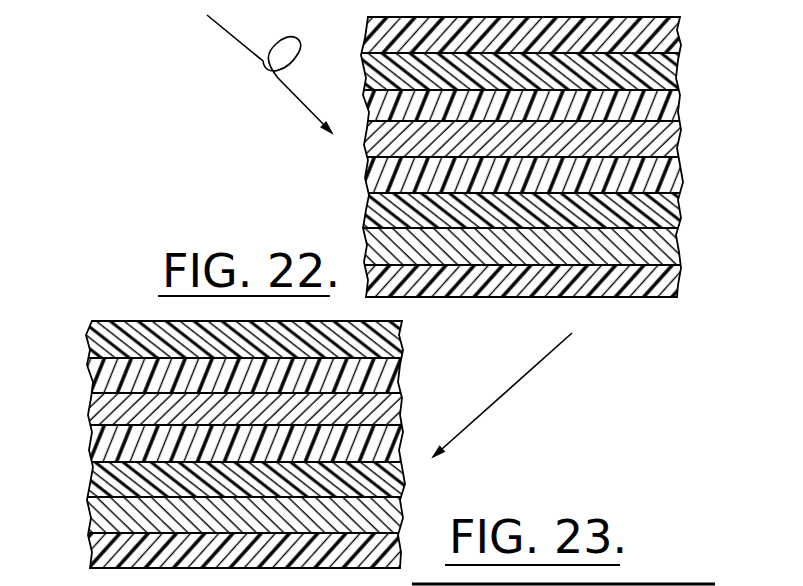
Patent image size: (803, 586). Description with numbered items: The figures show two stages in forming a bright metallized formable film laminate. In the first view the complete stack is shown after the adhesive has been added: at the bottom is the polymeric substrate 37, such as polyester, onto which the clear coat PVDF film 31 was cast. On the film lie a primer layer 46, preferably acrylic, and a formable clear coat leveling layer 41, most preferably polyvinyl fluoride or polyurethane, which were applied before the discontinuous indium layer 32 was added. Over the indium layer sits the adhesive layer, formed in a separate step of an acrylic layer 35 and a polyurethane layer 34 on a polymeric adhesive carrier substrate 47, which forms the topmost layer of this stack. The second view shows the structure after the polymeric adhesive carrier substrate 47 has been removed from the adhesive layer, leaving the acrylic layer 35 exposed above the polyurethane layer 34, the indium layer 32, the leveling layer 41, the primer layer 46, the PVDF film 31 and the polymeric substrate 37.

In FIG. 22, the clear coat PVDF film 31 is at (680, 242).
In FIG. 23, the clear coat PVDF film 31 is at (88, 516).
In FIG. 22, the discontinuous indium layer 32 is at (681, 138).
In FIG. 23, the discontinuous indium layer 32 is at (88, 408).
In FIG. 22, the polyurethane layer 34 is at (681, 106).
In FIG. 23, the polyurethane layer 34 is at (88, 376).
In FIG. 22, the acrylic layer 35 is at (681, 73).
In FIG. 23, the acrylic layer 35 is at (88, 344).
In FIG. 22, the polymeric substrate 37 is at (680, 284).
In FIG. 23, the polymeric substrate 37 is at (88, 551).
In FIG. 22, the formable clear coat leveling layer 41 is at (681, 172).
In FIG. 23, the formable clear coat leveling layer 41 is at (88, 444).
In FIG. 22, the primer layer 46 is at (681, 205).
In FIG. 23, the primer layer 46 is at (88, 481).
In FIG. 22, the polymeric adhesive carrier substrate 47 is at (682, 42).